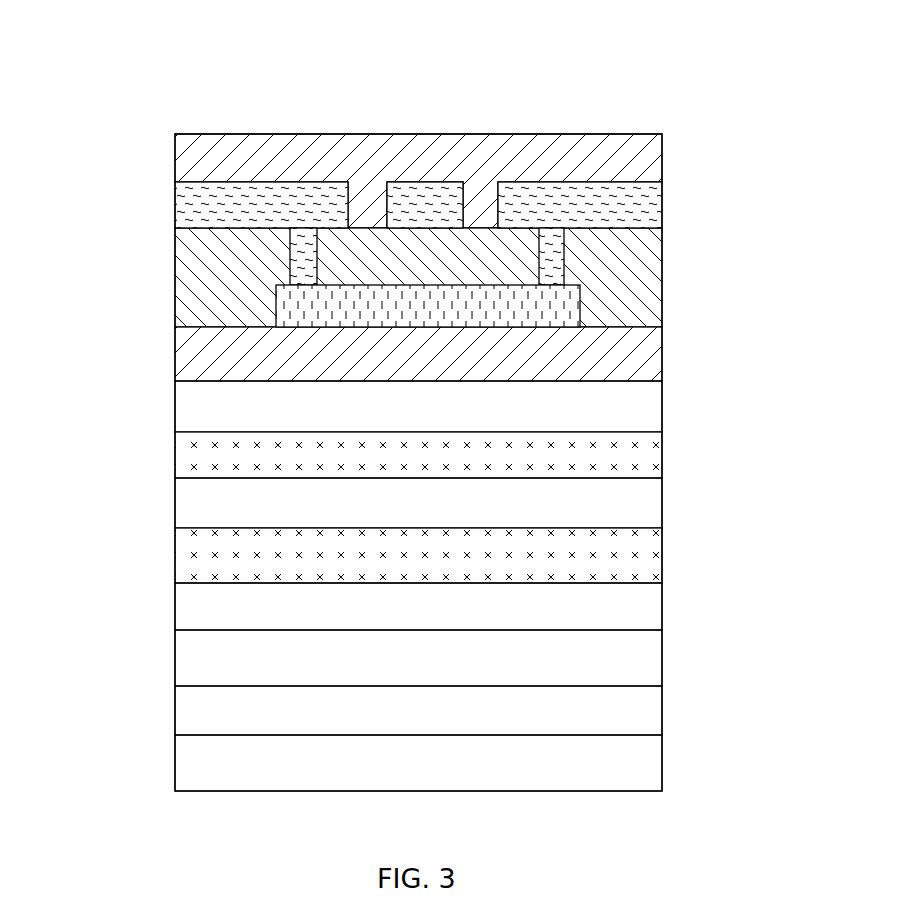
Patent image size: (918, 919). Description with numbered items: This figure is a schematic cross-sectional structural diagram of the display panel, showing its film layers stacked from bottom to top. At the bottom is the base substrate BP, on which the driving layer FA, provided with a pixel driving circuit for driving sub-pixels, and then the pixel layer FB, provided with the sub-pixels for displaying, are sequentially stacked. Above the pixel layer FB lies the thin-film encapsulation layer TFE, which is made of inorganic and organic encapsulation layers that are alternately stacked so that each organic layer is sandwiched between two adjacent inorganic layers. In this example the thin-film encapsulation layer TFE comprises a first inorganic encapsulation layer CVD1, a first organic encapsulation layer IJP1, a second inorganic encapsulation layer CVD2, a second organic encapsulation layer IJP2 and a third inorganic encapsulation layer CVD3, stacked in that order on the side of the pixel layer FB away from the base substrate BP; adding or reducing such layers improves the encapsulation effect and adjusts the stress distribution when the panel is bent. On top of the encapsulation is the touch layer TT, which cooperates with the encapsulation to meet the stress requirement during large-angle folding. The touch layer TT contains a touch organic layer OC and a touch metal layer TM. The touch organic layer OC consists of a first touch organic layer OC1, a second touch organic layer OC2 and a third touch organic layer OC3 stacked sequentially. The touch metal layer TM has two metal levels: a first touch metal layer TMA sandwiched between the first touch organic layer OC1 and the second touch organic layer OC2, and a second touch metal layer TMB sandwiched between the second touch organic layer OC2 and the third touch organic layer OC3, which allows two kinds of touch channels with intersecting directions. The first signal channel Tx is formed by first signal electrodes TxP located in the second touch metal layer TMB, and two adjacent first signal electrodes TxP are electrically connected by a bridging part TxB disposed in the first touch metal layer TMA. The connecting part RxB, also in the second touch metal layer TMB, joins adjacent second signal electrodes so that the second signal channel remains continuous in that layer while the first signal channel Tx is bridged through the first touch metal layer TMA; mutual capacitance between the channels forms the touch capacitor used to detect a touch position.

The touch layer TT is at (172, 134).
The thin-film encapsulation layer TFE is at (172, 381).
The touch organic layer OC is at (123, 10).
The first touch organic layer OC1 is at (623, 360).
The second touch organic layer OC2 is at (623, 265).
The third touch organic layer OC3 is at (623, 162).
The touch metal layer TM is at (698, 18).
The first touch metal layer TMA is at (516, 201).
The second touch metal layer TMB is at (465, 152).
The first signal electrode TxP is at (258, 207).
The bridging part TxB is at (346, 305).
The connecting part RxB is at (443, 210).
The first signal channel Tx is at (548, 208).
The first inorganic encapsulation layer CVD1 is at (623, 610).
The second inorganic encapsulation layer CVD2 is at (623, 503).
The third inorganic encapsulation layer CVD3 is at (623, 407).
The first organic encapsulation layer IJP1 is at (623, 560).
The second organic encapsulation layer IJP2 is at (623, 458).
The pixel layer FB is at (623, 663).
The driving layer FA is at (625, 715).
The base substrate BP is at (623, 765).